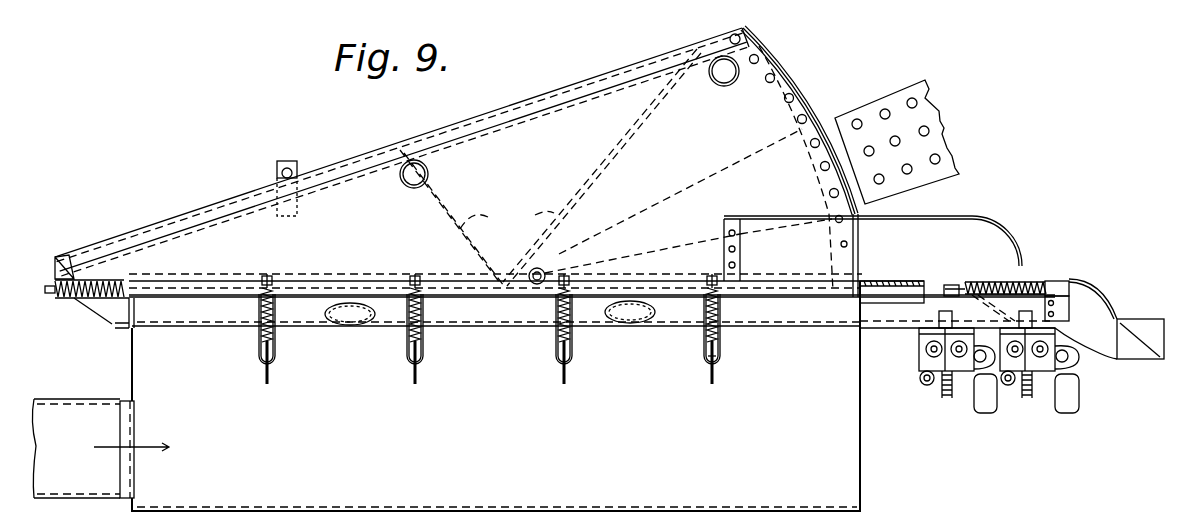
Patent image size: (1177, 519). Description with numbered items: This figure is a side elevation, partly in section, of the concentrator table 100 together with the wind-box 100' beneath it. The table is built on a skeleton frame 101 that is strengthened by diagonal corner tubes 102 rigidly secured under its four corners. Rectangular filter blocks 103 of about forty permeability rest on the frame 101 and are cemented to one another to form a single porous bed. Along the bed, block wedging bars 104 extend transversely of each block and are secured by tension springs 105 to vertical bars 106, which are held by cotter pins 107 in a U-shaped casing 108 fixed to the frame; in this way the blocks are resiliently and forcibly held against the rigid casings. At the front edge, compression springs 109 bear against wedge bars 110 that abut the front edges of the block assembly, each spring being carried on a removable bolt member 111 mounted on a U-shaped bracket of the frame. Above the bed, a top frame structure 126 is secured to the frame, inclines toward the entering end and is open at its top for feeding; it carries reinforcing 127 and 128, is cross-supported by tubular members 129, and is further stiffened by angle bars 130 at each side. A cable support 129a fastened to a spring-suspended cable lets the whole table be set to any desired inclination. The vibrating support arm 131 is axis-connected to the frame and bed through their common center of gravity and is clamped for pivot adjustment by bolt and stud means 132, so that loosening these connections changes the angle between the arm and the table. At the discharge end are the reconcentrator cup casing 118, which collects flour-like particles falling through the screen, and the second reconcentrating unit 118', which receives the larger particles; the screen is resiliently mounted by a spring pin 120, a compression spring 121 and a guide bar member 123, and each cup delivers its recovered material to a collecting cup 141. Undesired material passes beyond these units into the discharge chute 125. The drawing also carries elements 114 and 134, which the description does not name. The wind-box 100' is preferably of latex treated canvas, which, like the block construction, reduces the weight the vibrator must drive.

The concentrator table 100 is at (592, 268).
The wind-box 100' is at (479, 396).
The skeleton frame 101 is at (526, 315).
The diagonal corner tubes 102 is at (221, 315).
The filter blocks 103 is at (283, 283).
The block wedging bars 104 is at (400, 284).
The tension springs 105 is at (422, 316).
The vertical bars 106 is at (263, 376).
The cotter pins 107 is at (705, 358).
The U-shaped casing 108 is at (422, 337).
The compression springs 109 is at (67, 300).
The wedge bars 110 is at (133, 282).
The removable bolt member 111 is at (45, 291).
The frame extension member 114 is at (913, 277).
The reconcentrator cup casing 118 is at (957, 354).
The second reconcentrating unit 118' is at (1039, 373).
The spring pin 120 is at (1092, 282).
The compression spring 121 is at (1047, 277).
The guide bar member 123 is at (1076, 282).
The discharge chute 125 is at (1137, 348).
The top frame structure 126 is at (519, 142).
The reinforcing 127 is at (700, 40).
The reinforcing 128 is at (778, 70).
The tubular members 129 is at (723, 86).
The cable support 129a is at (290, 152).
The angle bars 130 is at (550, 167).
The vibrating support arm 131 is at (725, 164).
The bolt and stud means 132 is at (545, 264).
The perforated plate 134 is at (942, 132).
The collecting cup 141 is at (982, 402).